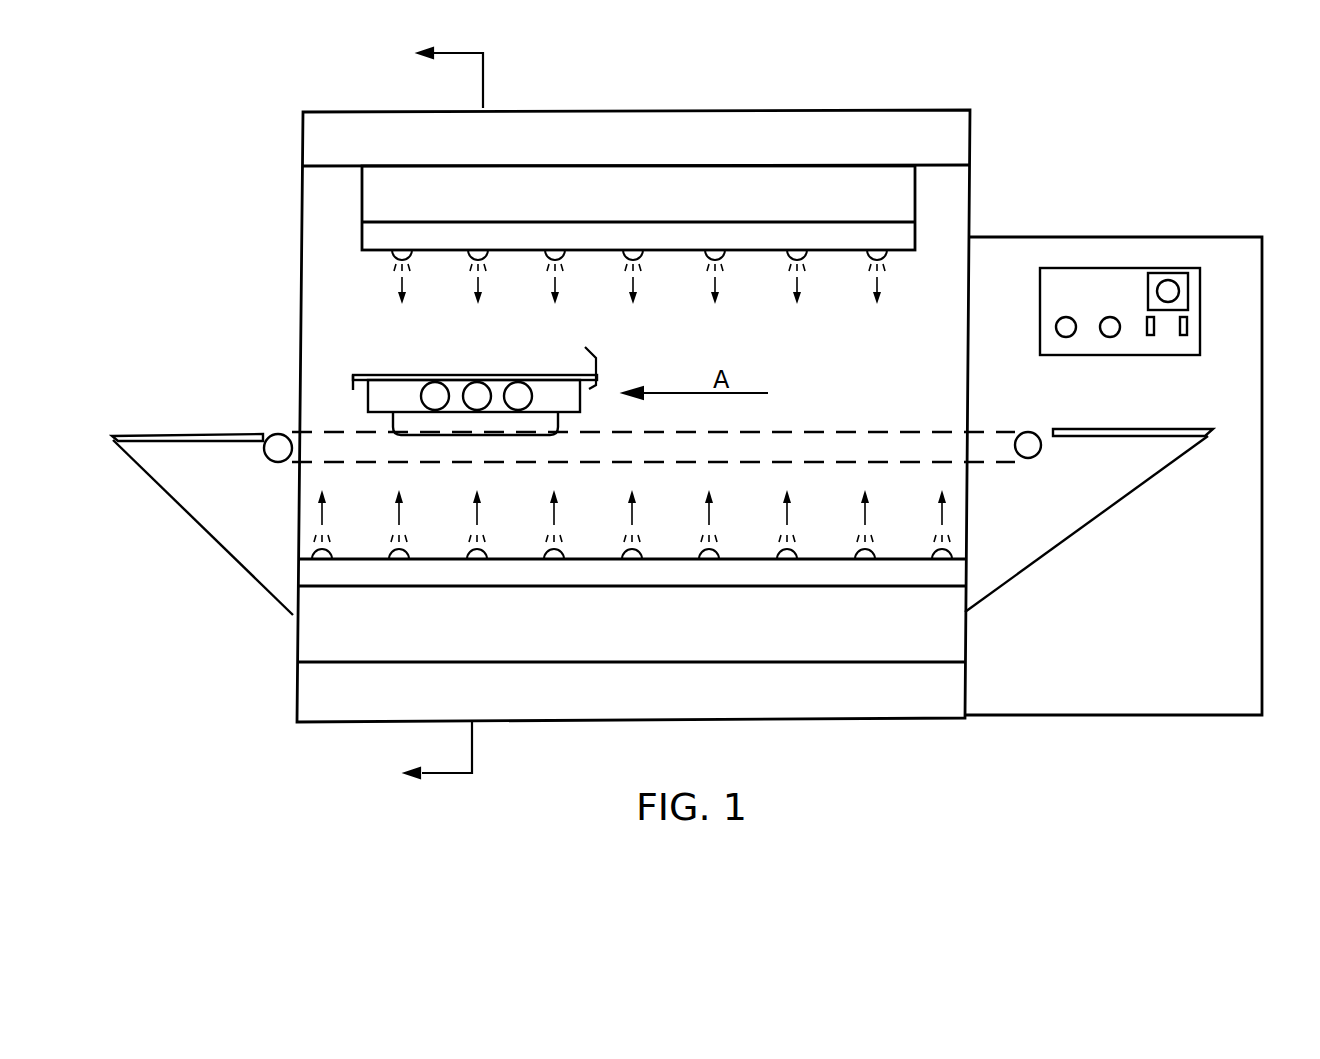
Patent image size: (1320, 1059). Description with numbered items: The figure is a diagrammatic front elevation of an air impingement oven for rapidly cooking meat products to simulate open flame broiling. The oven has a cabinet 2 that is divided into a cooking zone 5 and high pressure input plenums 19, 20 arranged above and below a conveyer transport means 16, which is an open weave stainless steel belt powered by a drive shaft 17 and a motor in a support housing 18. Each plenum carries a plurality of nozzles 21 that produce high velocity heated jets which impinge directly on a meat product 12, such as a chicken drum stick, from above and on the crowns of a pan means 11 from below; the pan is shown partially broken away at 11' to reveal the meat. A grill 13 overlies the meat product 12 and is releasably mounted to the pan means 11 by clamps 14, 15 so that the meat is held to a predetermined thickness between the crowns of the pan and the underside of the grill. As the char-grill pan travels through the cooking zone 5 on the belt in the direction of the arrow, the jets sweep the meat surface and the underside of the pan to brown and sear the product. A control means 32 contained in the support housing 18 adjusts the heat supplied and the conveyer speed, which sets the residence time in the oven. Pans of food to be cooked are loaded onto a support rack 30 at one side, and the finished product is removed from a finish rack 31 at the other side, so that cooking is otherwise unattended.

The cabinet 2 is at (970, 152).
The cooking zone 5 is at (836, 377).
The pan means 11 is at (475, 460).
The partially broken away portion of pan 11' is at (496, 355).
The meat product 12 is at (460, 410).
The grill 13 is at (460, 377).
The clamp 14 is at (355, 378).
The clamp 15 is at (598, 381).
The conveyer transport means 16 is at (907, 431).
The drive shaft 17 is at (1027, 433).
The support housing 18 is at (1174, 633).
The high pressure input plenum 19 is at (724, 213).
The high pressure input plenum 20 is at (688, 639).
The nozzles 21 is at (633, 261).
The support rack 30 is at (1163, 428).
The finish rack 31 is at (172, 435).
The control means 32 is at (1108, 307).